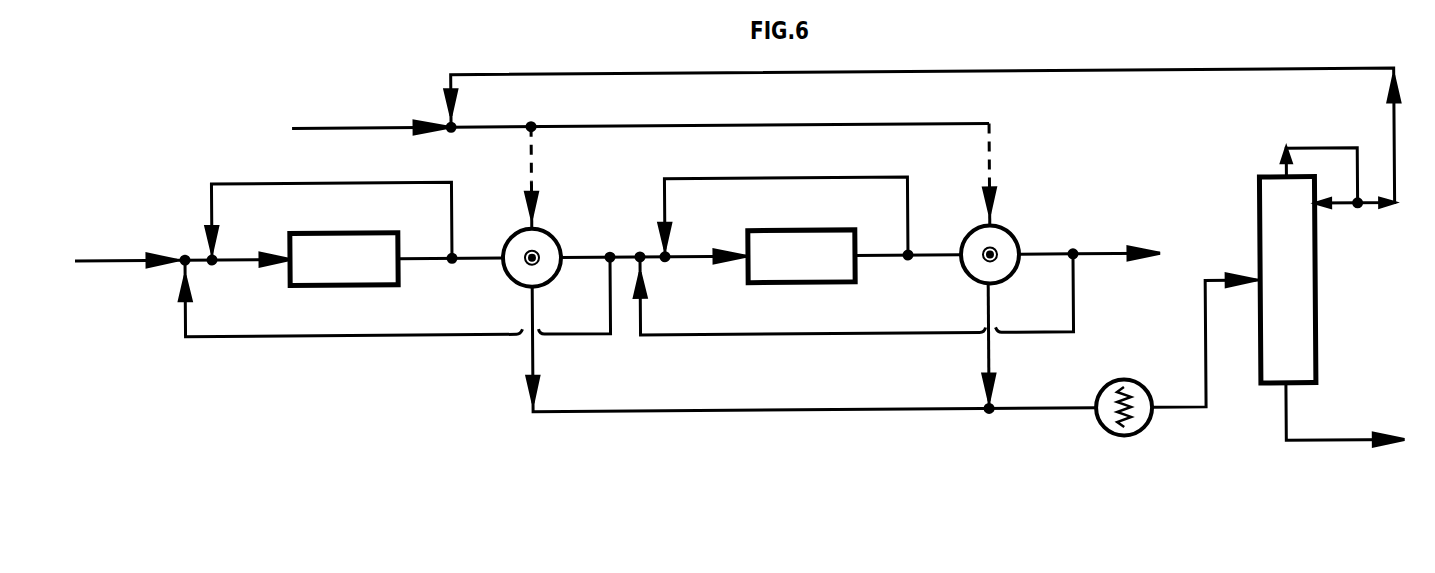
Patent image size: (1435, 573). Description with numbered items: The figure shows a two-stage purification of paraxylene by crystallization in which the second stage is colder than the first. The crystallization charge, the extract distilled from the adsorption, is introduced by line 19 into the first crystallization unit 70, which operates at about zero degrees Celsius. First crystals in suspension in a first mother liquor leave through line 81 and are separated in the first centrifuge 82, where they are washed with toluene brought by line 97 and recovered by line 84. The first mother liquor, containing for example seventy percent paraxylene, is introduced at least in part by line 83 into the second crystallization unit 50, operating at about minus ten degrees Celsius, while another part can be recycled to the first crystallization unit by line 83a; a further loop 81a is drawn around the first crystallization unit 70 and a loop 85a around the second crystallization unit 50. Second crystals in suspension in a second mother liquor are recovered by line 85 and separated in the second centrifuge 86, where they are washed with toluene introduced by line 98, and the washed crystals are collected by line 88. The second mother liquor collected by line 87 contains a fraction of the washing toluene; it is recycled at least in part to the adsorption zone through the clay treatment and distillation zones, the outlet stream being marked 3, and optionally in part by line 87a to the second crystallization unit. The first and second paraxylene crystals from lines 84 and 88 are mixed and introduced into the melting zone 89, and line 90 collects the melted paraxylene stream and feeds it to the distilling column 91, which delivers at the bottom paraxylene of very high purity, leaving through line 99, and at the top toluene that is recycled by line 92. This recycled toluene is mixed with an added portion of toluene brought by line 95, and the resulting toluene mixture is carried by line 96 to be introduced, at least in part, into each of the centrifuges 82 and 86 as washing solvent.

The product outlet stream 3 is at (1116, 256).
The line 19 is at (113, 254).
The second crystallization unit 50 is at (815, 269).
The first crystallization unit 70 is at (357, 269).
The line 81 is at (436, 260).
The first reactor recycle line 81a is at (210, 179).
The first centrifuge 82 is at (524, 228).
The line 83 is at (580, 256).
The line 83a is at (345, 333).
The line 84 is at (530, 350).
The line 85 is at (882, 257).
The second reactor recycle line 85a is at (663, 178).
The second centrifuge 86 is at (979, 231).
The line 87 is at (1058, 256).
The line 87a is at (718, 334).
The line 88 is at (986, 352).
The melting zone 89 is at (1105, 385).
The line 90 is at (1205, 301).
The distilling column 91 is at (1301, 297).
The line 92 is at (1100, 74).
The line 95 is at (333, 126).
The feed distribution line 96 is at (500, 126).
The line 97 is at (540, 172).
The line 98 is at (991, 152).
The column bottoms outlet line 99 is at (1325, 444).